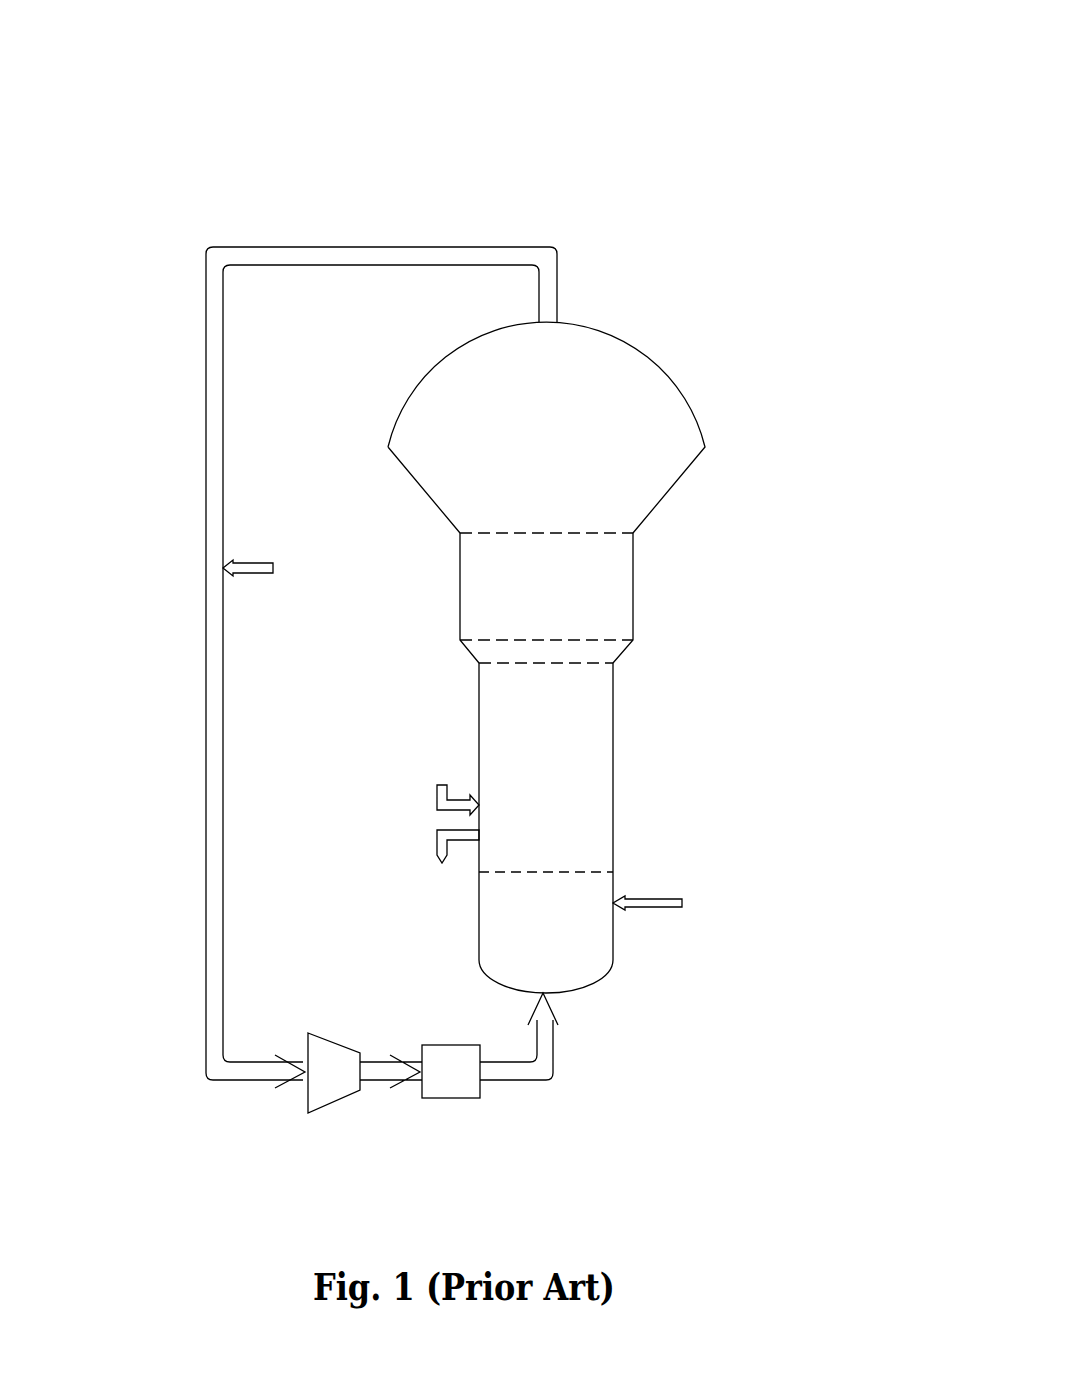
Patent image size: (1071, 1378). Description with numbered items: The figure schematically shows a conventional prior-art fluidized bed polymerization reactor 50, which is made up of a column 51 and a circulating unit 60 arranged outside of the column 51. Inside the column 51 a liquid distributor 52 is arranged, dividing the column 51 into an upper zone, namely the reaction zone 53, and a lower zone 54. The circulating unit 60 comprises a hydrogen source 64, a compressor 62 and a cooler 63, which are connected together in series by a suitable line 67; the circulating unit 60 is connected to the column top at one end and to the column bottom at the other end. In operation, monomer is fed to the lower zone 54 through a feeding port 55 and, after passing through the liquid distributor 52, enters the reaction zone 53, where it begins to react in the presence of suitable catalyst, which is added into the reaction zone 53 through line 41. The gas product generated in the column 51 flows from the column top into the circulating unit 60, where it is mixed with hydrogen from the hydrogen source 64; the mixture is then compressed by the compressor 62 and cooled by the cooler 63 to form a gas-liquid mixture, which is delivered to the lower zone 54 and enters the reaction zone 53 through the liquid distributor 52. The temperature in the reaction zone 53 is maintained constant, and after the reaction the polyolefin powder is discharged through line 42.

The fluidized bed polymerization reactor 50 is at (637, 125).
The column 51 is at (653, 355).
The liquid distributor 52 is at (582, 870).
The reaction zone 53 is at (572, 755).
The lower zone 54 is at (588, 957).
The feeding port 55 is at (682, 897).
The line 41 is at (438, 785).
The line 42 is at (438, 838).
The circulating unit 60 is at (150, 448).
The compressor 62 is at (335, 1085).
The cooler 63 is at (465, 1087).
The hydrogen source 64 is at (280, 564).
The line 67 is at (213, 620).